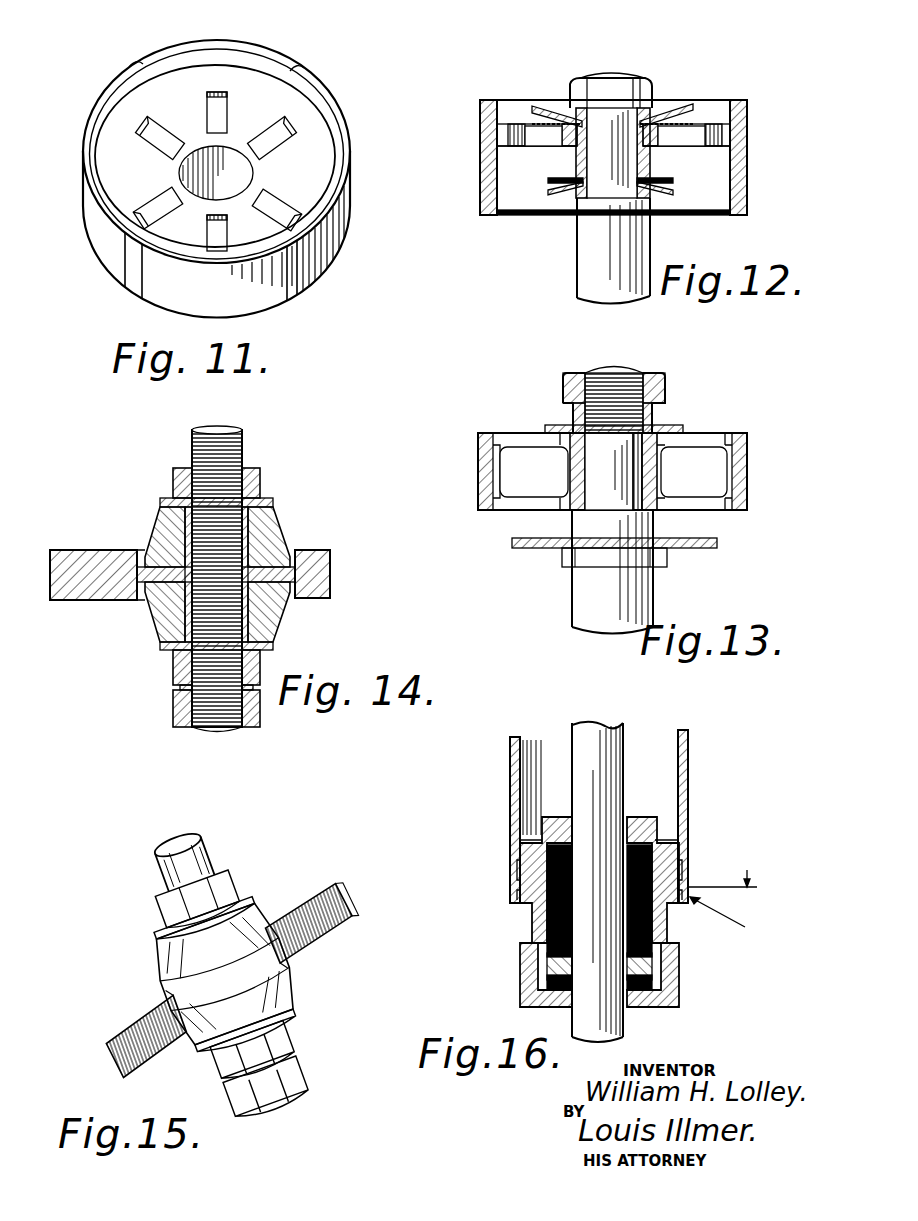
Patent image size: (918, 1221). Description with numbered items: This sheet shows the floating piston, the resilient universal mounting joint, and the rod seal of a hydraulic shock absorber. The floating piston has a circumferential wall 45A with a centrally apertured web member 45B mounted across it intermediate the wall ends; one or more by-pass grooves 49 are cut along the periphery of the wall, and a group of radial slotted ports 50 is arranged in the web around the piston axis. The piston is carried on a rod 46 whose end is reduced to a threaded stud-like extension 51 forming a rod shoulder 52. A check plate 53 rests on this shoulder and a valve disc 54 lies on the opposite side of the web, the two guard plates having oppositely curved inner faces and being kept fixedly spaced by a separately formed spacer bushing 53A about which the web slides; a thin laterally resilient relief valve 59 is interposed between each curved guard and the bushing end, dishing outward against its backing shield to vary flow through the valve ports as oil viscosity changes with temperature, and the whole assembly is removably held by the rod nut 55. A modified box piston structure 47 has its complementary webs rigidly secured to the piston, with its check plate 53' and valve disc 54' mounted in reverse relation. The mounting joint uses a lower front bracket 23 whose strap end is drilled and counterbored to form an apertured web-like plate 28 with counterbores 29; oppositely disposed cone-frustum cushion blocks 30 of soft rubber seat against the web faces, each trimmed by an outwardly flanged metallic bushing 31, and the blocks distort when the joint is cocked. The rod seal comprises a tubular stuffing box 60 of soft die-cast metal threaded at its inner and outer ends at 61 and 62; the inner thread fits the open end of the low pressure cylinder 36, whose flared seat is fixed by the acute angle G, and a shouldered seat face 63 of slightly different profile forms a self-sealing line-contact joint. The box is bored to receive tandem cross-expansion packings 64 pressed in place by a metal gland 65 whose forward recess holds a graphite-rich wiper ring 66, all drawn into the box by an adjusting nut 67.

In FIG. 14, the lower front bracket 23 is at (97, 596).
In FIG. 15, the lower front bracket 23 is at (330, 895).
In FIG. 14, the apertured web-like plate 28 is at (275, 574).
In FIG. 15, the apertured web-like plate 28 is at (158, 1010).
In FIG. 14, the counterbore 29 is at (140, 560).
In FIG. 15, the counterbore 29 is at (302, 975).
In FIG. 14, the cushion block 30 is at (270, 530).
In FIG. 15, the cushion block 30 is at (268, 915).
In FIG. 14, the metallic bushing 31 is at (260, 500).
In FIG. 15, the metallic bushing 31 is at (246, 900).
In FIG. 16, the low pressure cylinder 36 is at (684, 775).
In FIG. 11, the circumferential wall 45A is at (93, 222).
In FIG. 12, the circumferential wall 45A is at (492, 190).
In FIG. 11, the centrally apertured web member 45B is at (318, 148).
In FIG. 12, the centrally apertured web member 45B is at (497, 118).
In FIG. 12, the piston rod 46 is at (590, 275).
In FIG. 13, the piston rod 46 is at (590, 608).
In FIG. 14, the piston rod 46 is at (230, 432).
In FIG. 15, the piston rod 46 is at (200, 845).
In FIG. 16, the piston rod 46 is at (576, 745).
In FIG. 13, the box piston structure 47 is at (735, 478).
In FIG. 11, the by-pass groove 49 is at (130, 272).
In FIG. 11, the radial slotted port 50 is at (285, 195).
In FIG. 12, the radial slotted port 50 is at (696, 135).
In FIG. 13, the radial slotted port 50 is at (695, 505).
In FIG. 12, the stud-like extension 51 is at (605, 118).
In FIG. 13, the stud-like extension 51 is at (600, 458).
In FIG. 12, the rod shoulder 52 is at (590, 198).
In FIG. 13, the rod shoulder 52 is at (600, 520).
In FIG. 12, the check plate 53 is at (683, 221).
In FIG. 12, the spacer bushing 53A is at (680, 168).
In FIG. 13, the check plate 53' is at (652, 407).
In FIG. 12, the valve disc 54 is at (613, 71).
In FIG. 13, the valve disc 54' is at (640, 568).
In FIG. 12, the rod nut 55 is at (590, 92).
In FIG. 13, the rod nut 55 is at (655, 385).
In FIG. 12, the relief valve 59 is at (537, 112).
In FIG. 16, the stuffing box 60 is at (530, 913).
In FIG. 16, the innermost male thread 61 is at (520, 850).
In FIG. 16, the outermost thread 62 is at (537, 972).
In FIG. 16, the shouldered seat face 63 is at (518, 888).
In FIG. 16, the ring-shaped packing 64 is at (650, 870).
In FIG. 16, the metal gland 65 is at (652, 970).
In FIG. 16, the wiper ring 66 is at (635, 992).
In FIG. 16, the adjusting nut 67 is at (538, 1004).
In FIG. 16, the acute angle G is at (723, 898).